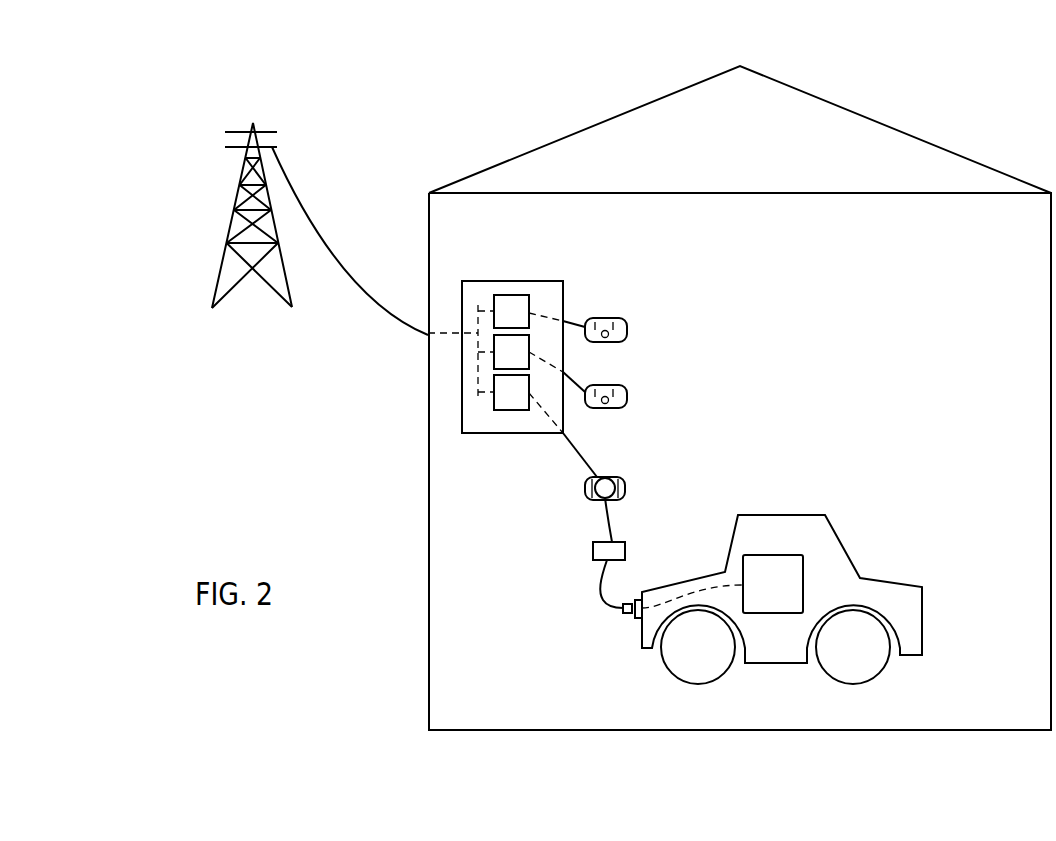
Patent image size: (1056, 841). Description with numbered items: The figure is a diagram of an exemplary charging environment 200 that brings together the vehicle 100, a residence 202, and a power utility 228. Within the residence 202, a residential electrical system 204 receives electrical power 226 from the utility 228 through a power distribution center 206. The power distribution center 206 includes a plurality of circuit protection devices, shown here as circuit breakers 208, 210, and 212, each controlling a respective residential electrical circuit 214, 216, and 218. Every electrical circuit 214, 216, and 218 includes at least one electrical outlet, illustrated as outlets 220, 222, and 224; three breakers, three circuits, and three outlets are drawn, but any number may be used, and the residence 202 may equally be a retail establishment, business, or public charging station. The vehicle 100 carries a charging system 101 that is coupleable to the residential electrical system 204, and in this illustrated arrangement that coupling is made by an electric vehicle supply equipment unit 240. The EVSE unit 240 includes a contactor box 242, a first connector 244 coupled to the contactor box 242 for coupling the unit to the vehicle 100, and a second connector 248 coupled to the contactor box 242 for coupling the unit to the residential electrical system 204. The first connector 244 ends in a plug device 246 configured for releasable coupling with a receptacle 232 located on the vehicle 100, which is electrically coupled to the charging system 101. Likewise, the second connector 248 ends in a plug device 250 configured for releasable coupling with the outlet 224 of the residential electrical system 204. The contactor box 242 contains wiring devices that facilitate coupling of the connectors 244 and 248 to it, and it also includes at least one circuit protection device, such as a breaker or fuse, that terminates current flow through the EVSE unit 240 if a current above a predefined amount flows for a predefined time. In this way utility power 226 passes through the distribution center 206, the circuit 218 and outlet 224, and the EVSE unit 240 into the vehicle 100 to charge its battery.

The vehicle 100 is at (797, 543).
The charging system 101 is at (787, 595).
The charging environment 200 is at (277, 80).
The residence 202 is at (755, 146).
The residential electrical system 204 is at (573, 262).
The power distribution center 206 is at (470, 422).
The circuit breaker 208 is at (526, 323).
The circuit breaker 210 is at (526, 364).
The circuit breaker 212 is at (526, 405).
The residential electrical circuit 214 is at (573, 317).
The residential electrical circuit 216 is at (573, 385).
The residential electrical circuit 218 is at (575, 453).
The electrical outlet 220 is at (625, 317).
The electrical outlet 222 is at (625, 385).
The electrical outlet 224 is at (623, 477).
The electrical power 226 is at (365, 300).
The power utility 228 is at (217, 136).
The receptacle 232 is at (637, 623).
The electric vehicle supply equipment unit 240 is at (633, 533).
The contactor box 242 is at (618, 543).
The first connector 244 is at (595, 593).
The plug device 246 is at (630, 597).
The second connector 248 is at (597, 515).
The plug device 250 is at (586, 488).